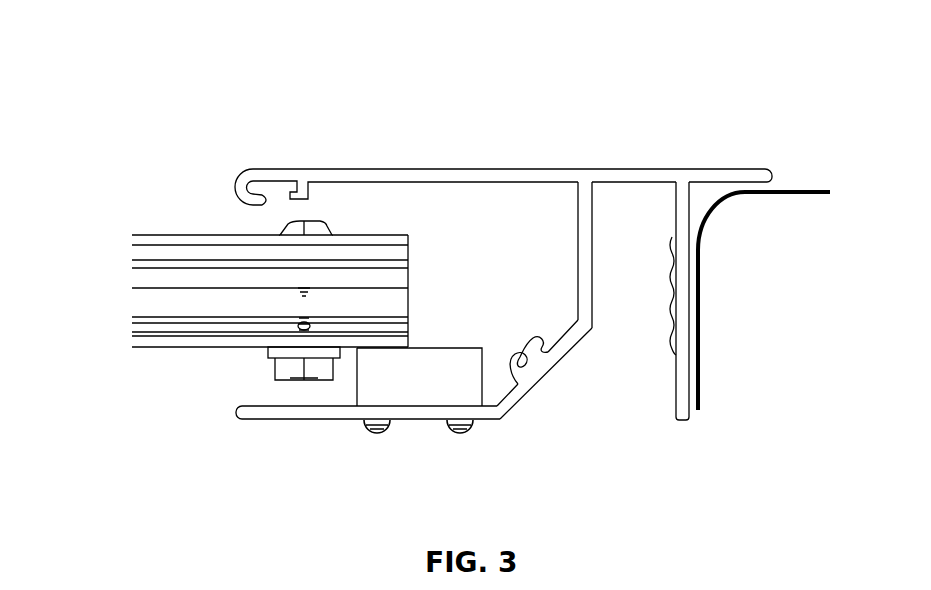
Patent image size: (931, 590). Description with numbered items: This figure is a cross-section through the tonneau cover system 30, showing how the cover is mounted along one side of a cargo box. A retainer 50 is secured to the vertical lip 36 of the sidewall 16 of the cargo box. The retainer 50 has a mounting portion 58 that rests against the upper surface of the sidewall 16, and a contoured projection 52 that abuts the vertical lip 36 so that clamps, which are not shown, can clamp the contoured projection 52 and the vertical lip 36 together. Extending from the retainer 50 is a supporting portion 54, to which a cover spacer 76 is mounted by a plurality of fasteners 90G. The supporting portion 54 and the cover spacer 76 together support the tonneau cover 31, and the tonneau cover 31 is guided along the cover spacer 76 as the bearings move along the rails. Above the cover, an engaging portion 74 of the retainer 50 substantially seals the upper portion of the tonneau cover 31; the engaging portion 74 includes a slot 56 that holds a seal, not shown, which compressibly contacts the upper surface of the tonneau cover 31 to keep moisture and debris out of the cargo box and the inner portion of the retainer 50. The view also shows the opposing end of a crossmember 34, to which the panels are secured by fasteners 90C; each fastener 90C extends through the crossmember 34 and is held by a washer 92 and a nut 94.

The tonneau cover system 30 is at (139, 56).
The tonneau cover 31 is at (128, 258).
The crossmember 34 is at (190, 260).
The sidewall 16 is at (774, 213).
The vertical lip 36 is at (701, 246).
The retainer 50 is at (560, 154).
The contoured projection 52 is at (684, 358).
The supporting portion 54 is at (545, 347).
The slot 56 is at (264, 186).
The mounting portion 58 is at (764, 176).
The engaging portion 74 is at (368, 175).
The cover spacer 76 is at (392, 380).
The fastener 90C is at (316, 227).
The fastener 90G is at (461, 472).
The washer 92 is at (282, 352).
The nut 94 is at (282, 370).